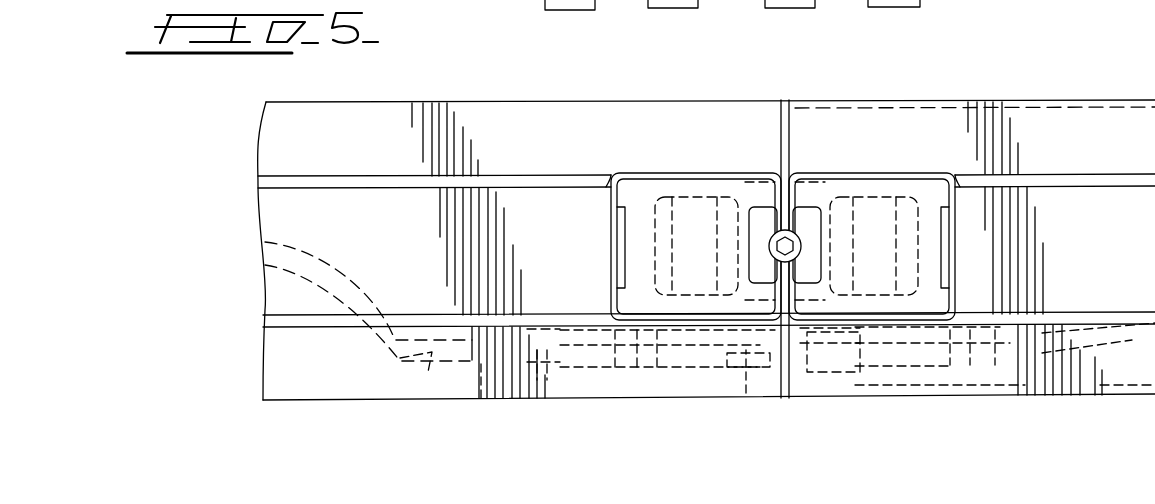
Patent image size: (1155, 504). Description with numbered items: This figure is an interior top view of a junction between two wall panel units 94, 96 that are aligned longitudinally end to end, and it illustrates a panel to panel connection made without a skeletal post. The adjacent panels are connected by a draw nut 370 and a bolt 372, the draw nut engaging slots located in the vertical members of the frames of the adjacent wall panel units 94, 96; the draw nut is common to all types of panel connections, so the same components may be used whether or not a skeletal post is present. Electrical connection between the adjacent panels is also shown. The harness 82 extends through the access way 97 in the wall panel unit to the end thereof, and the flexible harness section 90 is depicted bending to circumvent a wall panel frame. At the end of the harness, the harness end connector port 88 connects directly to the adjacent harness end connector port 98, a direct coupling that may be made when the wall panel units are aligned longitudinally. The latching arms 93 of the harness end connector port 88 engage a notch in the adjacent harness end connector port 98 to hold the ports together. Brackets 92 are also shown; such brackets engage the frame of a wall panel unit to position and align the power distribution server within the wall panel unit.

The harness 82 is at (420, 365).
The harness end connector port 88 is at (678, 368).
The flexible harness section 90 is at (480, 398).
The brackets 92 is at (570, 10).
The latching arms 93 is at (748, 393).
The wall panel unit 94 is at (735, 100).
The wall panel unit 96 is at (840, 100).
The access way 97 is at (280, 283).
The adjacent harness end connector port 98 is at (955, 365).
The draw nut 370 is at (660, 205).
The bolt 372 is at (778, 234).